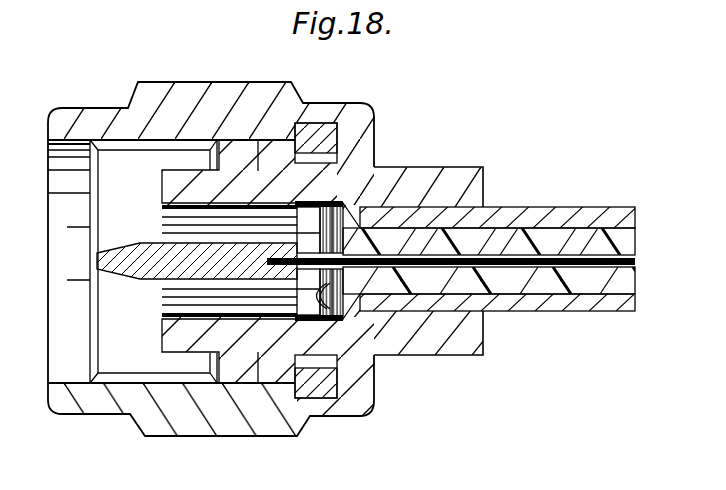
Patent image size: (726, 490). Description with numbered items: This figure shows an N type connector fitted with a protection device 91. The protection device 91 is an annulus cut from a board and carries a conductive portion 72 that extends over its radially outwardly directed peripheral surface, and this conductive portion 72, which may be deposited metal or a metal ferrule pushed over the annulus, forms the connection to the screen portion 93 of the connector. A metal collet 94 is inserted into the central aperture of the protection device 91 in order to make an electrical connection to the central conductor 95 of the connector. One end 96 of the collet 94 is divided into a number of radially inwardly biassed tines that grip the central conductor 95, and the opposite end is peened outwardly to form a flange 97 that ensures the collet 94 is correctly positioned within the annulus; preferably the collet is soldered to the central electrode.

The conductive portion 72 is at (340, 200).
The flange 97 is at (347, 226).
The metal collet 94 is at (232, 218).
The collet end with tines 96 is at (232, 243).
The central conductor 95 is at (272, 266).
The protection device 91 is at (333, 318).
The screen portion 93 is at (292, 338).